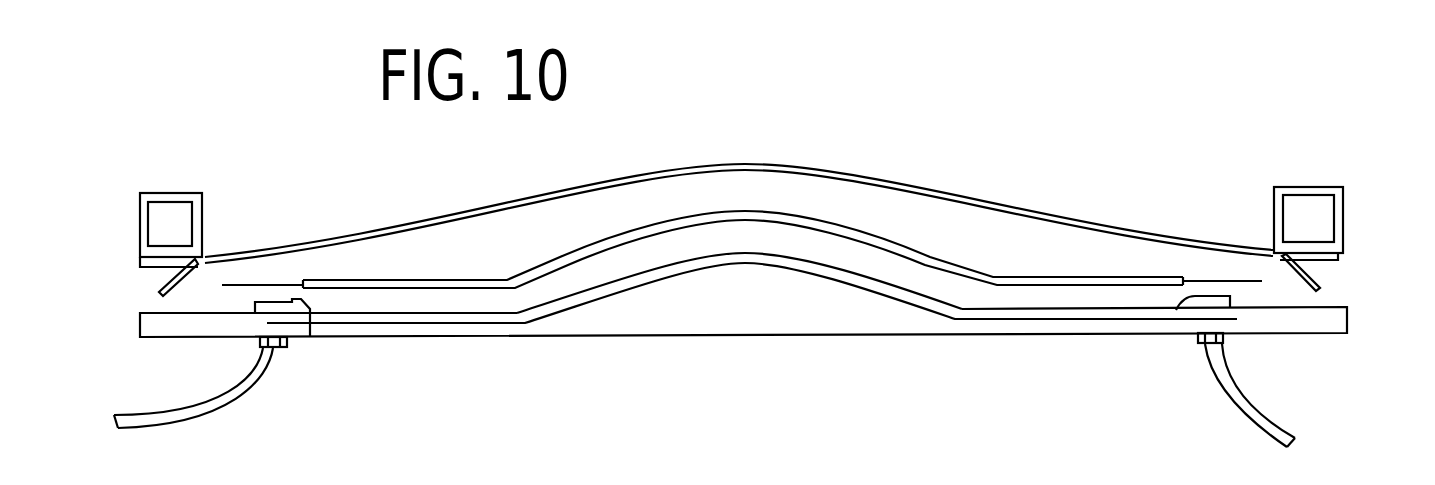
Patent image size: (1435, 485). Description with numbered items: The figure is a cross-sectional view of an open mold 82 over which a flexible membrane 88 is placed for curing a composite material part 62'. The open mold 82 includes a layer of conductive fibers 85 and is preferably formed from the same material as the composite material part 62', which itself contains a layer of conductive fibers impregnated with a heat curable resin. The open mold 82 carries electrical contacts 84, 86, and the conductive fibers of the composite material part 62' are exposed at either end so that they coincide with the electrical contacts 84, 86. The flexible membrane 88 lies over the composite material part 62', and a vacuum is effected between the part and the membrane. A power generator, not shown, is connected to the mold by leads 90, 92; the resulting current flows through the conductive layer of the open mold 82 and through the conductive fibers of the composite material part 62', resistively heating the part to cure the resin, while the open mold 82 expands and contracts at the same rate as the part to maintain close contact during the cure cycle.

The open mold 82 is at (1347, 325).
The electrical contact 84 is at (310, 337).
The layer of conductive fibers 85 is at (563, 302).
The electrical contact 86 is at (1176, 310).
The flexible membrane 88 is at (690, 168).
The lead 90 is at (245, 392).
The lead 92 is at (1245, 408).
The composite material part 62' is at (742, 218).